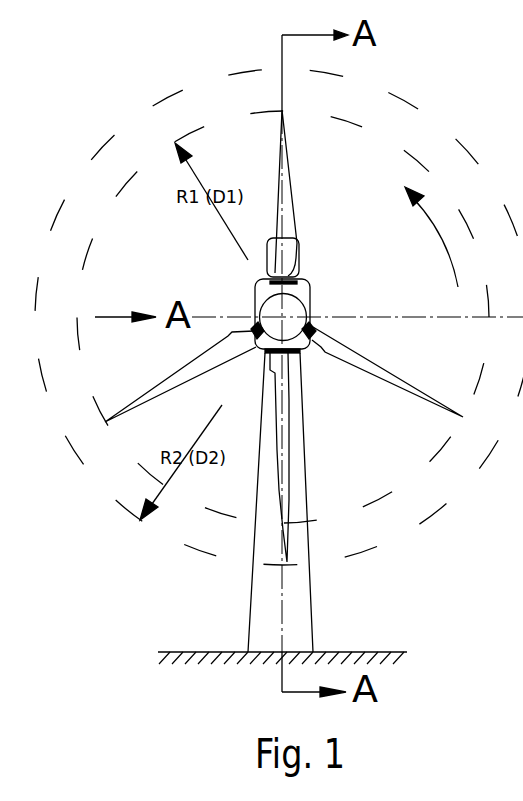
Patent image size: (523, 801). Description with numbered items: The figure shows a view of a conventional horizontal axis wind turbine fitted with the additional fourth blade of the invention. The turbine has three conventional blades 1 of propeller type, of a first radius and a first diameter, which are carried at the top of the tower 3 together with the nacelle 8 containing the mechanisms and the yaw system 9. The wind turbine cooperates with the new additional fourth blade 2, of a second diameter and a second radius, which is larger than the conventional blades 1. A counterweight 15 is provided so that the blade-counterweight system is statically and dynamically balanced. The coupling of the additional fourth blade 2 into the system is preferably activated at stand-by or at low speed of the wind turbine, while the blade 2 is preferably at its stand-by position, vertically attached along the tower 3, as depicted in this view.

The conventional blades 1 is at (288, 153).
The additional fourth blade 2 is at (291, 404).
The tower 3 is at (308, 456).
The nacelle 8 is at (312, 283).
The yaw system 9 is at (304, 355).
The counterweight 15 is at (299, 246).